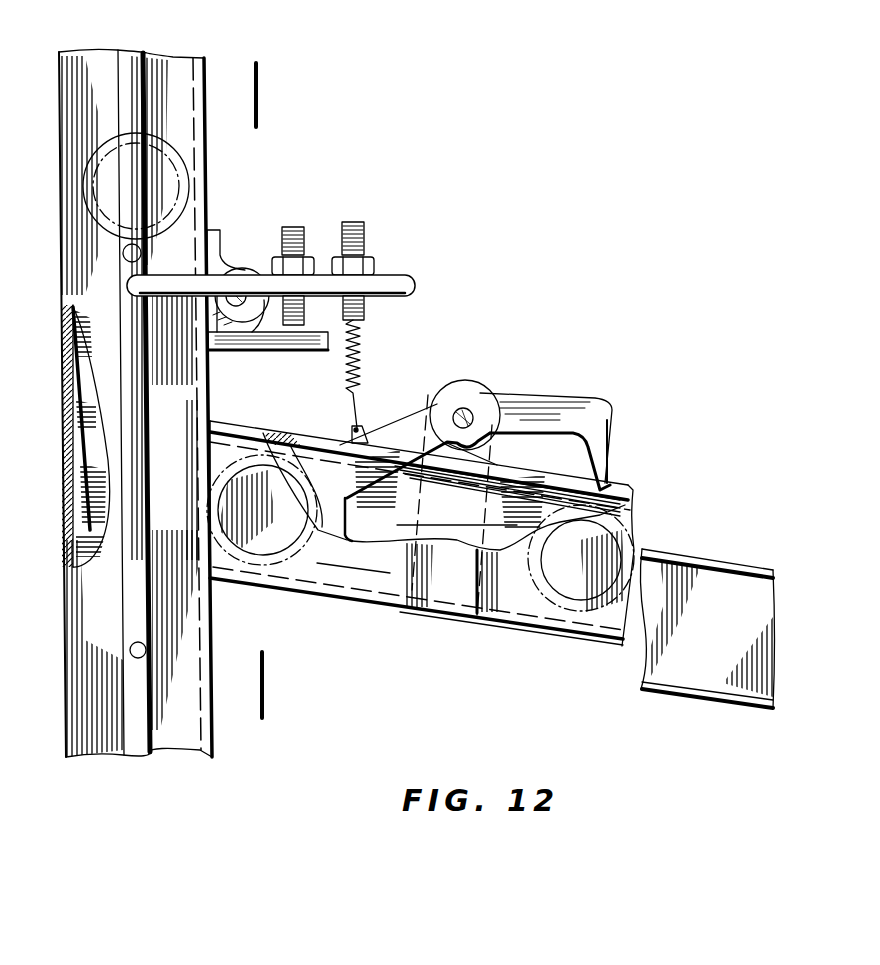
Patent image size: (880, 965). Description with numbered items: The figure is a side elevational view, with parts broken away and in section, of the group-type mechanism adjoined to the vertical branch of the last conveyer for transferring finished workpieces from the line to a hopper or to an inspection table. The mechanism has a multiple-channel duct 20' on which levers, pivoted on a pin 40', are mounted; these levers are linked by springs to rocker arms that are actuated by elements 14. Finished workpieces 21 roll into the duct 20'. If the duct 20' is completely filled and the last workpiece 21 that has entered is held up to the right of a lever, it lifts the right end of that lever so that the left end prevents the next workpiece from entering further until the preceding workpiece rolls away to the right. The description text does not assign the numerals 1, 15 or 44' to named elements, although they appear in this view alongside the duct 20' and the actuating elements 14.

The upright column 1 is at (199, 157).
The elements 14 is at (140, 247).
The channel member 15 is at (138, 612).
The multiple-channel duct 20' is at (420, 536).
The workpiece 21 is at (630, 532).
The pin 40' is at (521, 409).
The guide member 44' is at (179, 399).